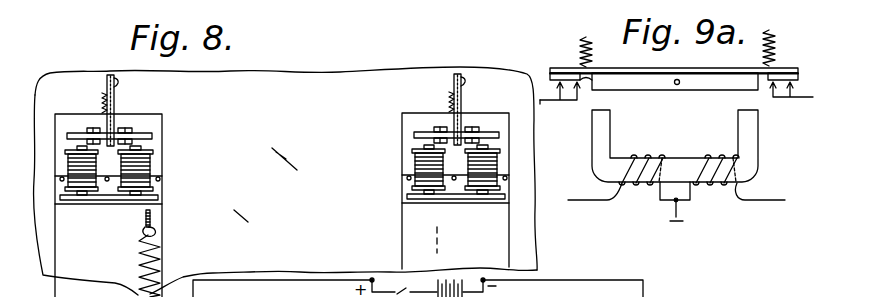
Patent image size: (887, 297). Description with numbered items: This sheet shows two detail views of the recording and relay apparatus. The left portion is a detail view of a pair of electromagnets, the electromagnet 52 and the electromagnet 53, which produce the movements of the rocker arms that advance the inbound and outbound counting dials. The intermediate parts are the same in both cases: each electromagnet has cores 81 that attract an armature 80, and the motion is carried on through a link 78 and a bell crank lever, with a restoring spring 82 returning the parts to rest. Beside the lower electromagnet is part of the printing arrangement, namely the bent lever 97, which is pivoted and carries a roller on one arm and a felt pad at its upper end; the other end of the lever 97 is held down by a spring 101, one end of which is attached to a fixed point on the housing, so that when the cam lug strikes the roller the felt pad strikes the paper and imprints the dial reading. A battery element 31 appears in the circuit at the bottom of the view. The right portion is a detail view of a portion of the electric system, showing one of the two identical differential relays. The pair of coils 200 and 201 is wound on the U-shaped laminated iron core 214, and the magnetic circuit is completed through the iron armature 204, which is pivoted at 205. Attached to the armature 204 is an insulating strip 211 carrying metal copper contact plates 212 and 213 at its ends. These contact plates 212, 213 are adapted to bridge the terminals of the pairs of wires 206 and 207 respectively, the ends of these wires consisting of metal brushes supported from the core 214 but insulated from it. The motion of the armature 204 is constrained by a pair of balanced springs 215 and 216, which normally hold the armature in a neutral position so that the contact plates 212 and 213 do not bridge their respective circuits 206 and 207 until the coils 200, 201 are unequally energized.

In FIG. 8, the link 78 is at (118, 86).
In FIG. 8, the restoring spring 82 is at (103, 104).
In FIG. 8, the armature 80 is at (152, 136).
In FIG. 8, the cores 81 is at (143, 147).
In FIG. 8, the electromagnet 53 is at (153, 162).
In FIG. 8, the electromagnet 52 is at (412, 161).
In FIG. 8, the bent lever 97 is at (150, 218).
In FIG. 8, the spring 101 is at (158, 248).
In FIG. 8, the battery 31 is at (540, 287).
In FIG. 9A, the coil 200 is at (630, 187).
In FIG. 9A, the coil 201 is at (713, 187).
In FIG. 9A, the iron armature 204 is at (705, 89).
In FIG. 9A, the pivot 205 is at (680, 80).
In FIG. 9A, the pair of wires 206 is at (548, 101).
In FIG. 9A, the pair of wires 207 is at (808, 99).
In FIG. 9A, the insulating strip 211 is at (575, 71).
In FIG. 9A, the contact plate 212 is at (598, 78).
In FIG. 9A, the contact plate 213 is at (767, 81).
In FIG. 9A, the U-shaped laminated iron core 214 is at (748, 131).
In FIG. 9A, the balanced spring 215 is at (586, 37).
In FIG. 9A, the balanced spring 216 is at (770, 48).